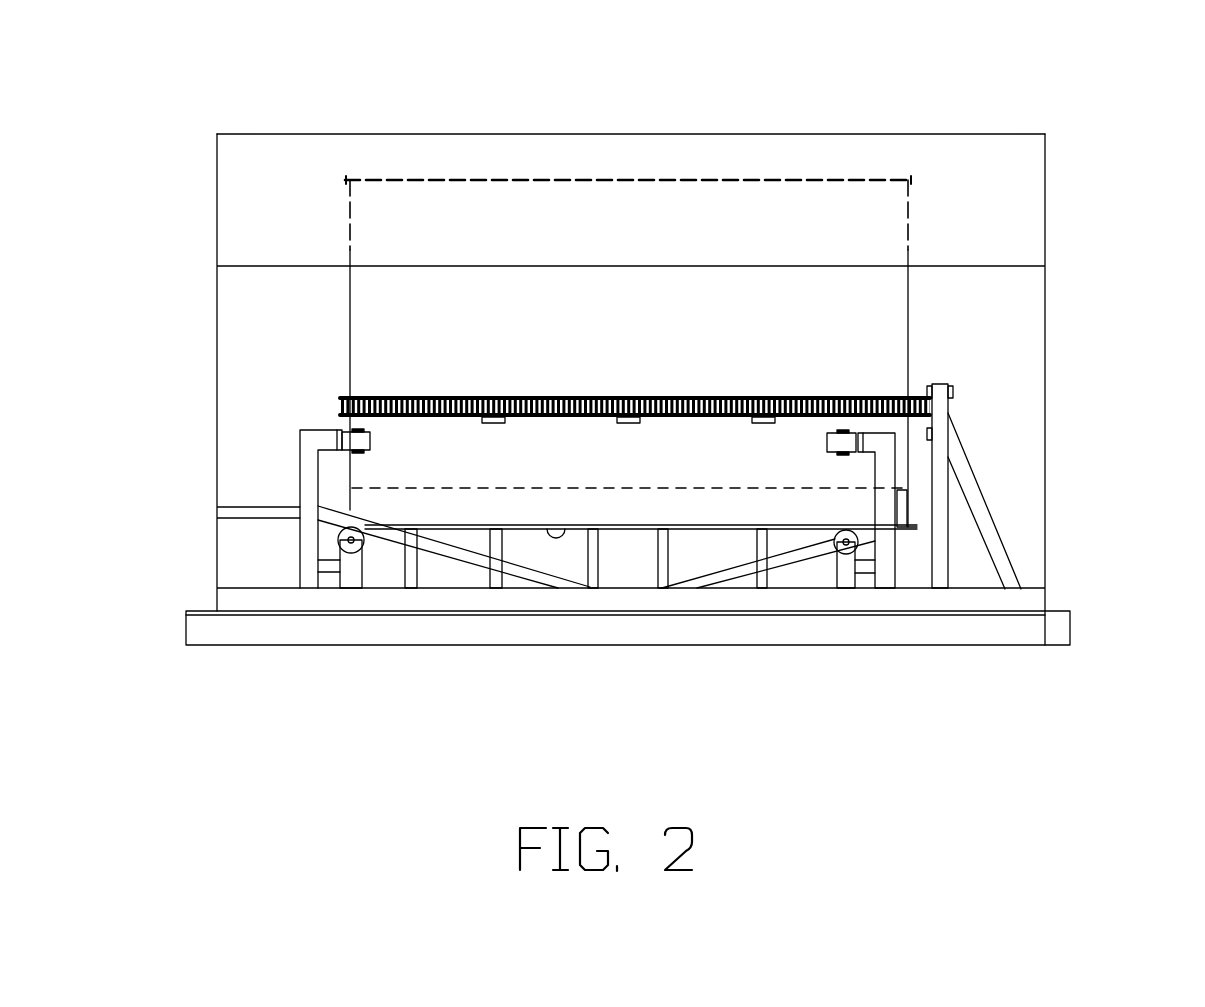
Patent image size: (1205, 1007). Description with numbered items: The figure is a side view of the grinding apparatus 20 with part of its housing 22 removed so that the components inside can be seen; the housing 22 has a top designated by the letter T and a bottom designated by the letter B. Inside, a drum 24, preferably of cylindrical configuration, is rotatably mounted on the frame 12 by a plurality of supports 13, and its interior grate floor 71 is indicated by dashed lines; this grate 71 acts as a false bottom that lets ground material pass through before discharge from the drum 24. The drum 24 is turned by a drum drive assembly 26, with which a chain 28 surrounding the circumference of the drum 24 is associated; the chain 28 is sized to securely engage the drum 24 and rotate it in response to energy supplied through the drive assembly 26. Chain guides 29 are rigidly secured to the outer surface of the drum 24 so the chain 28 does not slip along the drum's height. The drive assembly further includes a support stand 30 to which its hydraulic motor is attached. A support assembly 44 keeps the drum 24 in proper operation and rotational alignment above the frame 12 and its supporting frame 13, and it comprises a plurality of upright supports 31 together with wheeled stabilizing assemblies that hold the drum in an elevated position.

The sorting apparatus 20 is at (995, 135).
The housing 22 is at (1045, 210).
The drum 24 is at (350, 332).
The drum drive assembly 26 is at (950, 383).
The chain 28 is at (832, 399).
The chain guides 29 is at (630, 423).
The support stand 30 is at (995, 520).
The upright supports 31 is at (309, 430).
The support assembly 44 is at (299, 555).
The grate floor 71 is at (447, 488).
The supports 13 is at (405, 562).
The frame 12 is at (555, 645).
The top T is at (292, 134).
The bottom B is at (547, 528).